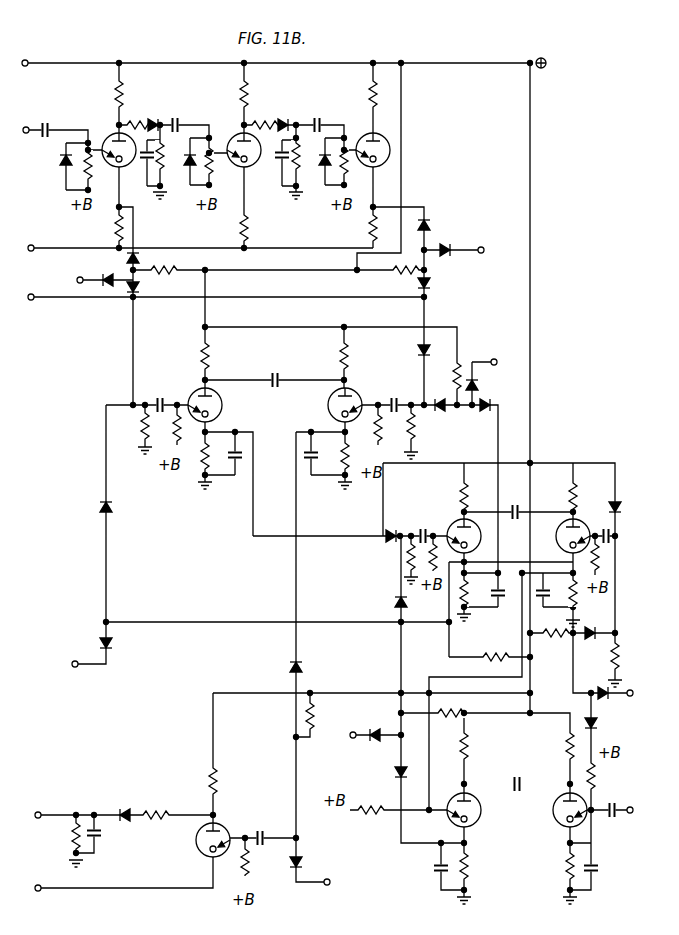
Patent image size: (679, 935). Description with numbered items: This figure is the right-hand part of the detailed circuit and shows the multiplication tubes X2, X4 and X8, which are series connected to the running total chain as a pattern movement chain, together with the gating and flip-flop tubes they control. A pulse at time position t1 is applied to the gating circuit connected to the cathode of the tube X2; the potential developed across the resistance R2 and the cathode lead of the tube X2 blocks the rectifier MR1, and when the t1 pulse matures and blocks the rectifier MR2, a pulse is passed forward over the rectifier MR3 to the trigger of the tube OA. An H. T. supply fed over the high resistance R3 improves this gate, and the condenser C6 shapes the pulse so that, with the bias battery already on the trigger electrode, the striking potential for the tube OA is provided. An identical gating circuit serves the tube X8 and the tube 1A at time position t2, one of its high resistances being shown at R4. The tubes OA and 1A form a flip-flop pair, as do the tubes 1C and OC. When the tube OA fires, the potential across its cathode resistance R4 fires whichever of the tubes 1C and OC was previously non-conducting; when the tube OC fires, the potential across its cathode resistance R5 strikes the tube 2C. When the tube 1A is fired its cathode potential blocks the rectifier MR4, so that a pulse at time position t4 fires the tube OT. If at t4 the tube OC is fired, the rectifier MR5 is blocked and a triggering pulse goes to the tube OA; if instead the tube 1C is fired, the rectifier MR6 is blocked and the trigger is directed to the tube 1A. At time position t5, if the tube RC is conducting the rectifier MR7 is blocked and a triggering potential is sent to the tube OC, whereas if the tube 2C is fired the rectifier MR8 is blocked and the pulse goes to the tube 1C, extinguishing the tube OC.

The multiplication tube X2 is at (119, 160).
The multiplication tube X4 is at (244, 160).
The multiplication tube X8 is at (372, 160).
The tube OA is at (197, 400).
The tube 1A is at (352, 397).
The tube 1C is at (455, 530).
The tube OC is at (578, 530).
The tube OT is at (222, 830).
The tube 2C is at (471, 821).
The tube RC is at (563, 821).
The resistance R2 is at (105, 228).
The high resistance R3 is at (178, 266).
The cathode resistance R4 is at (186, 494).
The cathode resistance R5 is at (584, 596).
The rectifier MR1 is at (160, 263).
The blocking rectifier MR2 is at (109, 262).
The rectifier MR3 is at (152, 290).
The rectifier MR4 is at (315, 672).
The rectifier MR5 is at (416, 610).
The rectifier MR6 is at (490, 390).
The rectifier MR7 is at (608, 731).
The rectifier MR8 is at (372, 774).
The condenser C6 is at (152, 398).
The time position t1 is at (346, 542).
The time position t2 is at (492, 251).
The time position t4 is at (289, 624).
The time position t5 is at (488, 714).